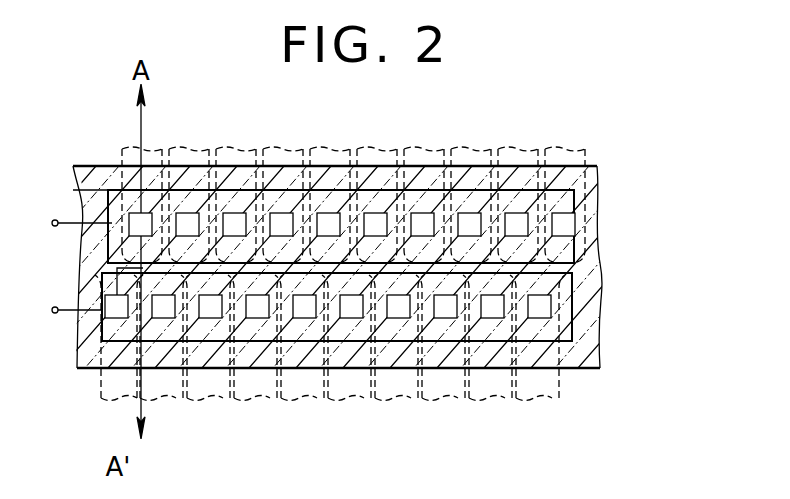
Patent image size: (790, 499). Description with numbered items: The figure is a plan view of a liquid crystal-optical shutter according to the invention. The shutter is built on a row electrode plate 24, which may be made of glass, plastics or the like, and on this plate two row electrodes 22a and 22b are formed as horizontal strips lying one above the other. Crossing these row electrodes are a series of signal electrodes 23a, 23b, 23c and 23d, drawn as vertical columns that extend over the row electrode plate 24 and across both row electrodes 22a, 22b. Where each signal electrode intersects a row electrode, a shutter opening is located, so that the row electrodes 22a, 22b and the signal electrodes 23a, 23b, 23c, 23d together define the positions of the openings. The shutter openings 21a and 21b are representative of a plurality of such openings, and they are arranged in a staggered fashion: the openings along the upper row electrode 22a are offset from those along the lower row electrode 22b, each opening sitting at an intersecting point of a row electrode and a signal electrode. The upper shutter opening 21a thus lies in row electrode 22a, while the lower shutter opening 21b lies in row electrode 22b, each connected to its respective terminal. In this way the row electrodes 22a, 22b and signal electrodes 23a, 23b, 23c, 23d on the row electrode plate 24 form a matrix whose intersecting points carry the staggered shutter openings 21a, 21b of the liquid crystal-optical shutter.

The shutter opening 21a is at (128, 213).
The shutter opening 21b is at (102, 304).
The row electrode 22a is at (567, 208).
The row electrode 22b is at (572, 300).
The signal electrode 23a is at (305, 147).
The signal electrode 23b is at (253, 147).
The signal electrode 23c is at (199, 147).
The signal electrode 23d is at (148, 147).
The row electrode plate 24 is at (597, 345).